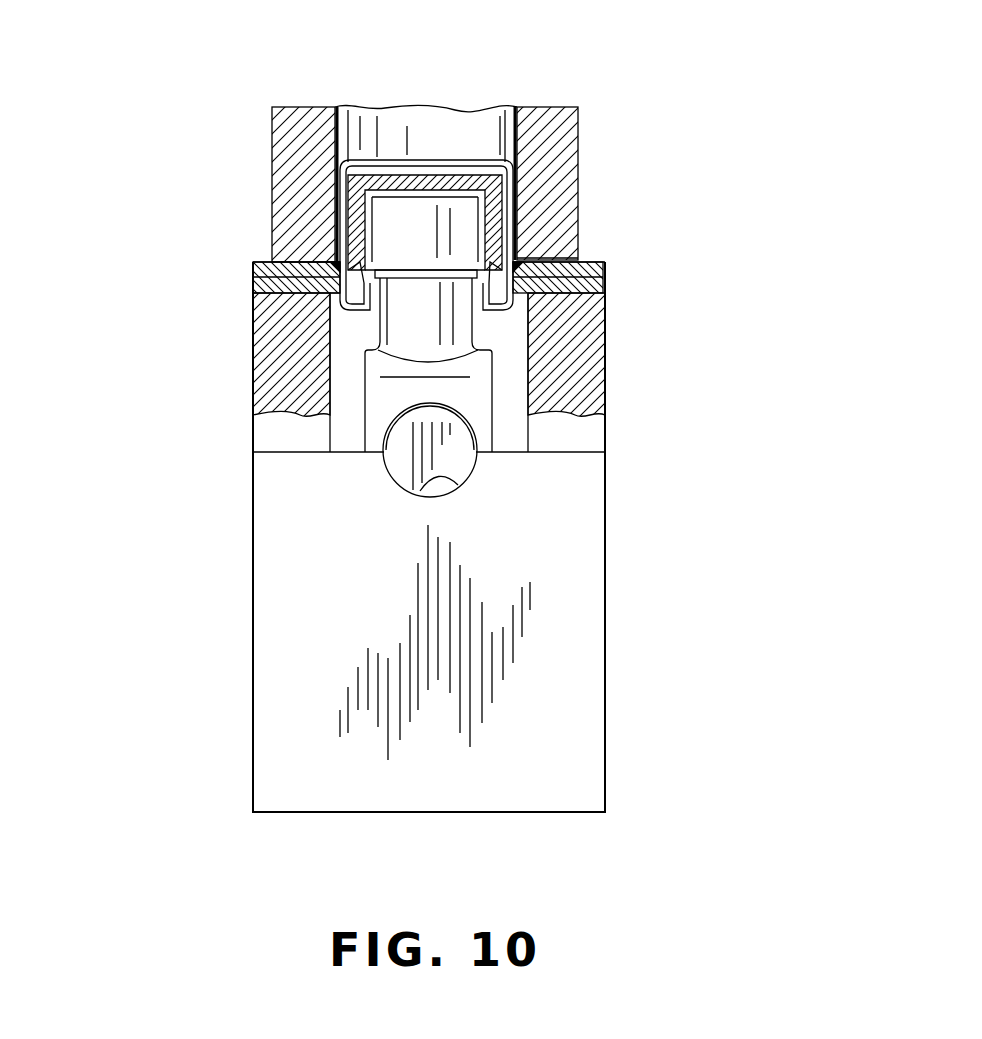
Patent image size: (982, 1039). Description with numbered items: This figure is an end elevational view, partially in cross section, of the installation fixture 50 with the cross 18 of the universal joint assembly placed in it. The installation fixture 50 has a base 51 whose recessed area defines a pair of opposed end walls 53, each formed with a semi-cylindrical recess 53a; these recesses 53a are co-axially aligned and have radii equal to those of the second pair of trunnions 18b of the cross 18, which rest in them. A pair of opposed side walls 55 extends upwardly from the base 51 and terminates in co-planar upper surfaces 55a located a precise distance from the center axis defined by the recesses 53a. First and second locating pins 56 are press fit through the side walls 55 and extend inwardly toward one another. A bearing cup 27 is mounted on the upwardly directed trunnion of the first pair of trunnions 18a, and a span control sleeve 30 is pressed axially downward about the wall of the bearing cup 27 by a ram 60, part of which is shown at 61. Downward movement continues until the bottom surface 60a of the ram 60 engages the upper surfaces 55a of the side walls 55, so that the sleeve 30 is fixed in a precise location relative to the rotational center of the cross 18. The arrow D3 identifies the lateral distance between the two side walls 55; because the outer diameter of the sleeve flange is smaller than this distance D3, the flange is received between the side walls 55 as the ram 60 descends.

The first wall of housing member 61 is at (349, 122).
The ram 60 is at (543, 117).
The bottom surface of the ram 60a is at (578, 256).
The span control sleeve 30 is at (530, 184).
The first pair of trunnions 18a is at (397, 230).
The cross 18 is at (455, 397).
The second pair of trunnions 18b is at (402, 461).
The semi-cylindrical recesses 53a is at (458, 485).
The end walls 53 is at (563, 448).
The locating pins 56 is at (255, 285).
The side walls 55 is at (262, 383).
The upper surfaces of the side walls 55a is at (262, 258).
The bearing cup 27 is at (333, 314).
The installation fixture 50 is at (217, 359).
The lateral distance between the side walls D3 is at (334, 382).
The base 51 is at (554, 740).